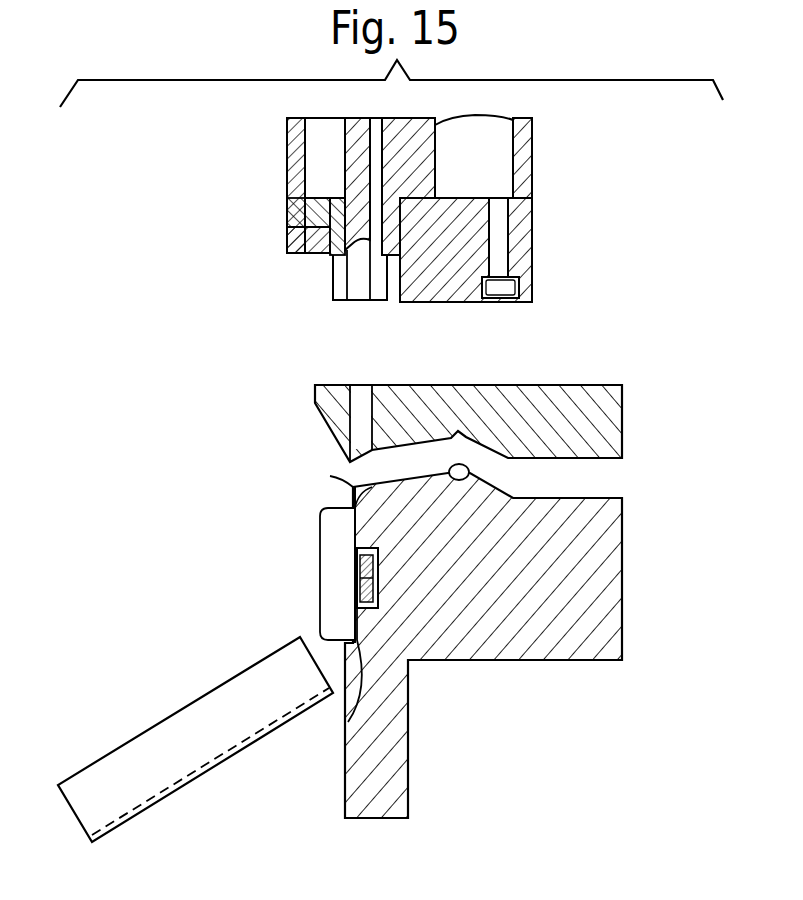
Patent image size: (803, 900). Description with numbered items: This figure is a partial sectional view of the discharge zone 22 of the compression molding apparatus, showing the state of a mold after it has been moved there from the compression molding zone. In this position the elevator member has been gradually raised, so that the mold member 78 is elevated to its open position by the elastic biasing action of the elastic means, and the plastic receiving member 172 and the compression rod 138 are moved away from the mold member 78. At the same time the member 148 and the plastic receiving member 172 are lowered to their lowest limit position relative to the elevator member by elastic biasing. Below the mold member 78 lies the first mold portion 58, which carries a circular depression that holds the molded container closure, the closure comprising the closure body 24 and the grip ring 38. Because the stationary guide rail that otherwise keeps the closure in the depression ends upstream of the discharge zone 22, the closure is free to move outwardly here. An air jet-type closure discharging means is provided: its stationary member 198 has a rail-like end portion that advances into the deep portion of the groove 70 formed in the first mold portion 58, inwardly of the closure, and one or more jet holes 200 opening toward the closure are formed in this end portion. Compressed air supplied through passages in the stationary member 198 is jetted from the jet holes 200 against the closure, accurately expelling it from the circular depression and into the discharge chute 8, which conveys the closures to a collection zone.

The discharge chute 8 is at (165, 800).
The discharge zone 22 is at (232, 482).
The closure body 24 is at (314, 550).
The grip ring 38 is at (330, 476).
The first mold portion 58 is at (632, 564).
The groove 70 is at (363, 700).
The mold member 78 is at (310, 392).
The compression rod 138 is at (336, 150).
The member 148 is at (540, 259).
The plastic receiving member 172 is at (328, 280).
The stationary member 198 is at (357, 565).
The jet holes 200 is at (357, 580).